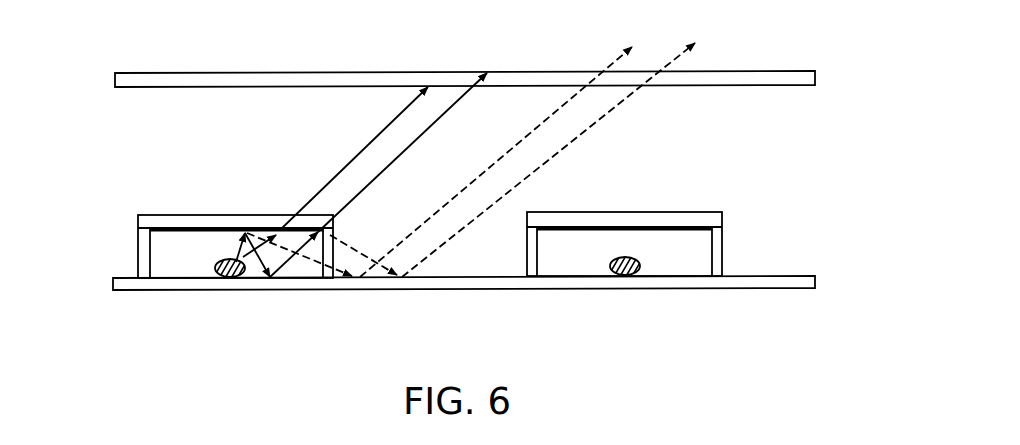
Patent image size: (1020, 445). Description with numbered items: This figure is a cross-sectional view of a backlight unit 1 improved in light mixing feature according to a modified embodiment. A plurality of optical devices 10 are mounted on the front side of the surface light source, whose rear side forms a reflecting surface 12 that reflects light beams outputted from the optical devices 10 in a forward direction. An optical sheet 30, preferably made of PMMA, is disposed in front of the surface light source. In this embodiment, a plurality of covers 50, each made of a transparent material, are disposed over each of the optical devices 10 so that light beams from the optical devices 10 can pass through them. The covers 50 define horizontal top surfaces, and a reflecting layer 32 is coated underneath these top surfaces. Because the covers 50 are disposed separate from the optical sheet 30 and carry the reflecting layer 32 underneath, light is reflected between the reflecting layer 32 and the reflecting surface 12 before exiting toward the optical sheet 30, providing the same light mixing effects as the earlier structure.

The backlight unit 1 is at (775, 209).
The optical device 10 is at (228, 284).
The reflecting surface 12 is at (770, 289).
The optical sheet 30 is at (815, 78).
The reflecting layer 32 is at (172, 238).
The cover 50 is at (160, 216).